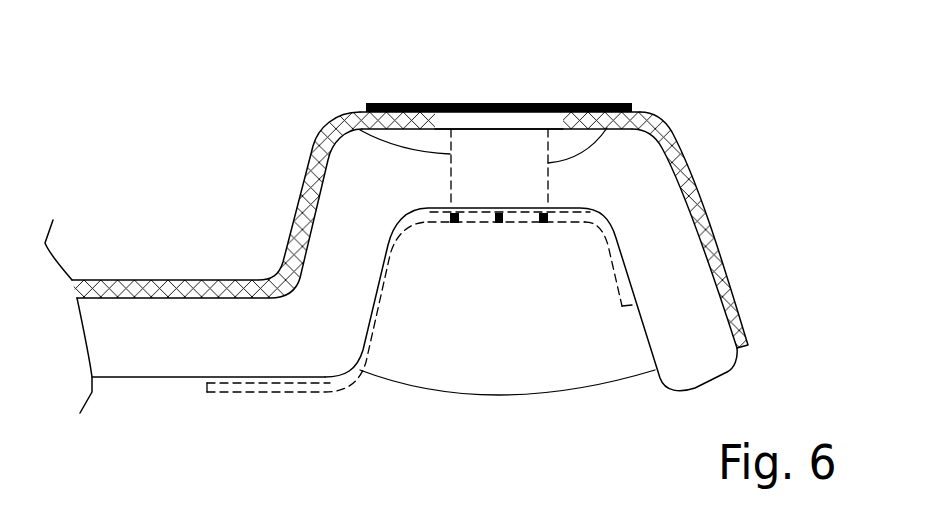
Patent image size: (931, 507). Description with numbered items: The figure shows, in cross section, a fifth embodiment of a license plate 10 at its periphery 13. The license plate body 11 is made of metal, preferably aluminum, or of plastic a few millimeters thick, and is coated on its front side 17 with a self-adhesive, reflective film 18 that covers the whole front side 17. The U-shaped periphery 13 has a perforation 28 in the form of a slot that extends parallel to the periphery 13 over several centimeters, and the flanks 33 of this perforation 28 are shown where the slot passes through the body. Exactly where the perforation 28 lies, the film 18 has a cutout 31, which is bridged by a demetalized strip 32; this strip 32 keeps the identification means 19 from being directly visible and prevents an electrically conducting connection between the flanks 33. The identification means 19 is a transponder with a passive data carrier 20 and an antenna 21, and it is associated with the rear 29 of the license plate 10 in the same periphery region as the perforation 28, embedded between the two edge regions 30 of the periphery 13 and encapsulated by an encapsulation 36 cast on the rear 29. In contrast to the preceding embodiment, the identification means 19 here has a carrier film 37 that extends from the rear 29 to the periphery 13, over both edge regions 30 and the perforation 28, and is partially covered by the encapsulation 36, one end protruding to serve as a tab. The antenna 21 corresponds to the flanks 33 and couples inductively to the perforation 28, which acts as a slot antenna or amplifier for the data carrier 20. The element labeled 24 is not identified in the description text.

The license plate 10 is at (128, 218).
The license plate body 11 is at (166, 355).
The periphery 13 is at (653, 153).
The front side 17 is at (133, 293).
The film 18 is at (208, 285).
The identification means 19 is at (467, 250).
The data carrier 20 is at (500, 220).
The antenna 21 is at (452, 223).
The plate 24 is at (377, 103).
The perforation 28 is at (466, 148).
The rear 29 is at (190, 380).
The edge regions 30 is at (623, 260).
The cutout 31 is at (437, 120).
The demetalized strip 32 is at (548, 114).
The flanks 33 is at (360, 130).
The encapsulation 36 is at (538, 382).
The carrier film 37 is at (300, 385).